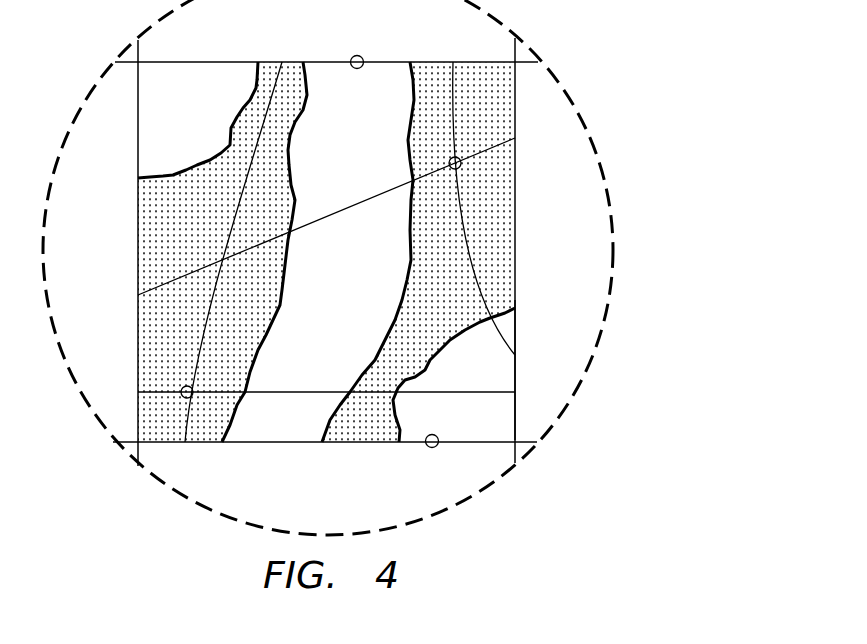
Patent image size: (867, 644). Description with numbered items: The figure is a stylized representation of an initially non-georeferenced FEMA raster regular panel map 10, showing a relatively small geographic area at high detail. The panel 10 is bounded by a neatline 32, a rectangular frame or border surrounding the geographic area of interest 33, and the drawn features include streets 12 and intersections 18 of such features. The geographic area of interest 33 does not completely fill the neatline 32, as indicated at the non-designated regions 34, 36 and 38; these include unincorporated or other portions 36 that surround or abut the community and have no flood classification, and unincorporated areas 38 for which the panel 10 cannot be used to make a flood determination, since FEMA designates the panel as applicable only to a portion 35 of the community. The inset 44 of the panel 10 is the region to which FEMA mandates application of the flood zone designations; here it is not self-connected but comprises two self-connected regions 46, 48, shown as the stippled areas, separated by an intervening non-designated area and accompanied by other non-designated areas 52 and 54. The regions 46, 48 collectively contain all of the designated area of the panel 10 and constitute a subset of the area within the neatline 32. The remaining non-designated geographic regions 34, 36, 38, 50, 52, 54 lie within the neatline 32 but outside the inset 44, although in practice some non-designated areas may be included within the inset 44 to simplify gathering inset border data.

The regular panel map 10 is at (426, 52).
The streets 12 is at (453, 107).
The intersections 18 is at (460, 168).
The neatline 32 is at (358, 55).
The geographic area of interest 33 is at (420, 143).
The portion of a community 35 is at (278, 190).
The unfilled area within neatline 34 is at (248, 42).
The unincorporated or other portions 36 is at (275, 436).
The unincorporated areas 38 is at (510, 365).
The inset 44 is at (255, 341).
The first self-connected region of inset 46 is at (260, 308).
The second self-connected region of inset 48 is at (452, 305).
The non-designated geographic region 50 is at (198, 121).
The non-designated area 52 is at (338, 288).
The non-designated area 54 is at (474, 427).